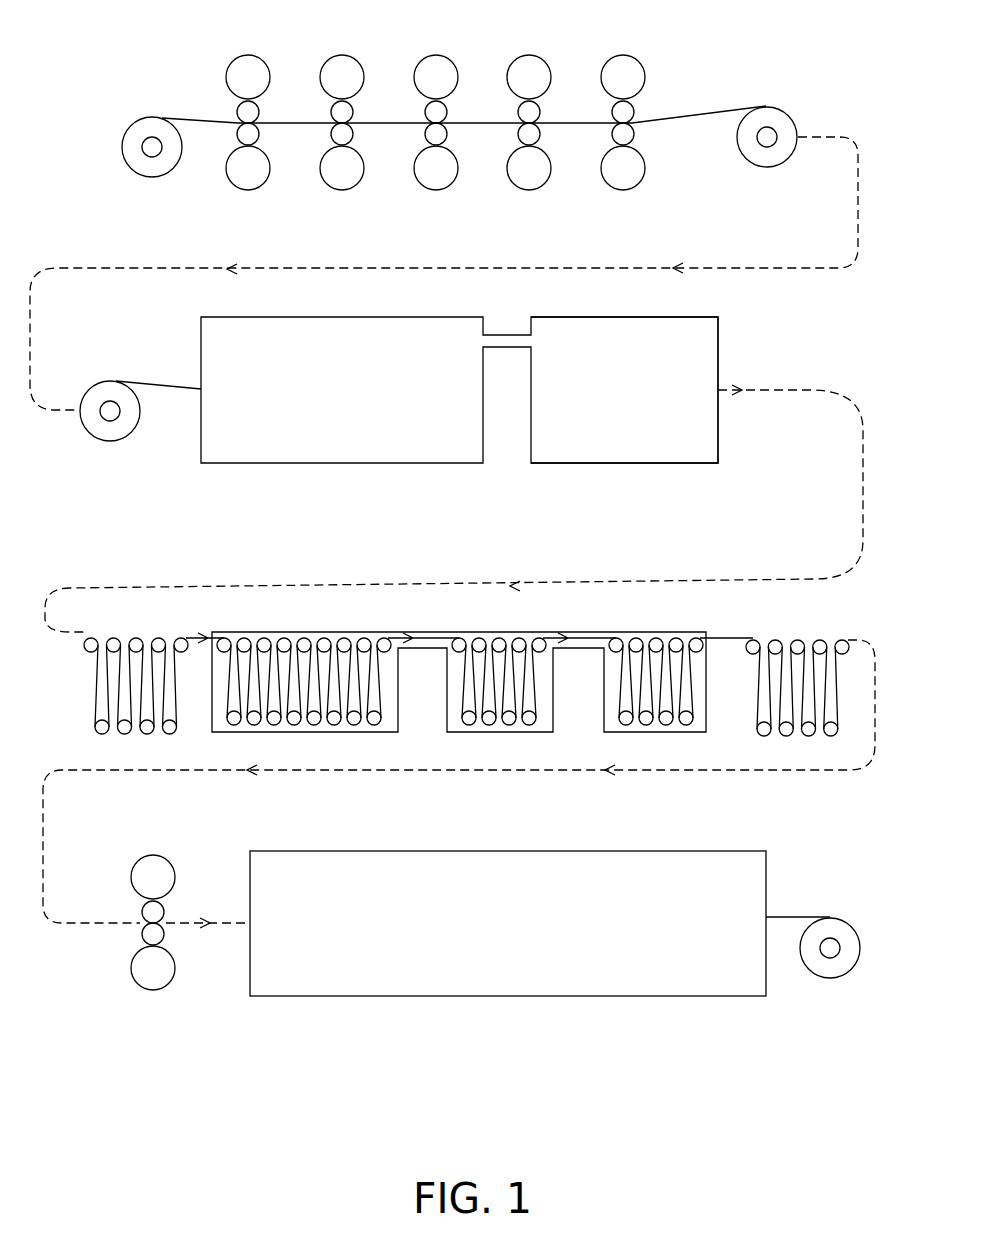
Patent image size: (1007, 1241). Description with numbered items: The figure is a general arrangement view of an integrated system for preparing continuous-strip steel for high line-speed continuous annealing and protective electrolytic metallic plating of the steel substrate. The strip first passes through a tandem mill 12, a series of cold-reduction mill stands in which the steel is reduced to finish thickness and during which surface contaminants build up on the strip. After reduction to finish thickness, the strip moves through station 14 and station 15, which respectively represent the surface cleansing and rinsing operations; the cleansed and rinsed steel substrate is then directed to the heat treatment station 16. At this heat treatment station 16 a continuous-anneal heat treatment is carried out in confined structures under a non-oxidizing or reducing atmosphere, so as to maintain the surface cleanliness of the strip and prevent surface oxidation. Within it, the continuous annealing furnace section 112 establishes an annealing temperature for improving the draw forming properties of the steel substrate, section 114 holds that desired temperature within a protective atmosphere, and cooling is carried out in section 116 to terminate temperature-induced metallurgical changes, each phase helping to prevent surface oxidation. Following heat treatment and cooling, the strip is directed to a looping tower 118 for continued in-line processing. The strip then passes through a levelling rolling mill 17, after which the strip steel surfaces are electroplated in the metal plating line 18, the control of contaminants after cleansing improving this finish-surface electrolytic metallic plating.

The tandem mill 12 is at (365, 29).
The station 14 is at (326, 397).
The station 15 is at (609, 397).
The heat treatment station 16 is at (196, 742).
The levelling rolling mill 17 is at (119, 949).
The metal plating line 18 is at (511, 934).
The continuous annealing furnace section 112 is at (321, 615).
The section 114 is at (477, 614).
The section 116 is at (650, 614).
The looping tower 118 is at (789, 615).